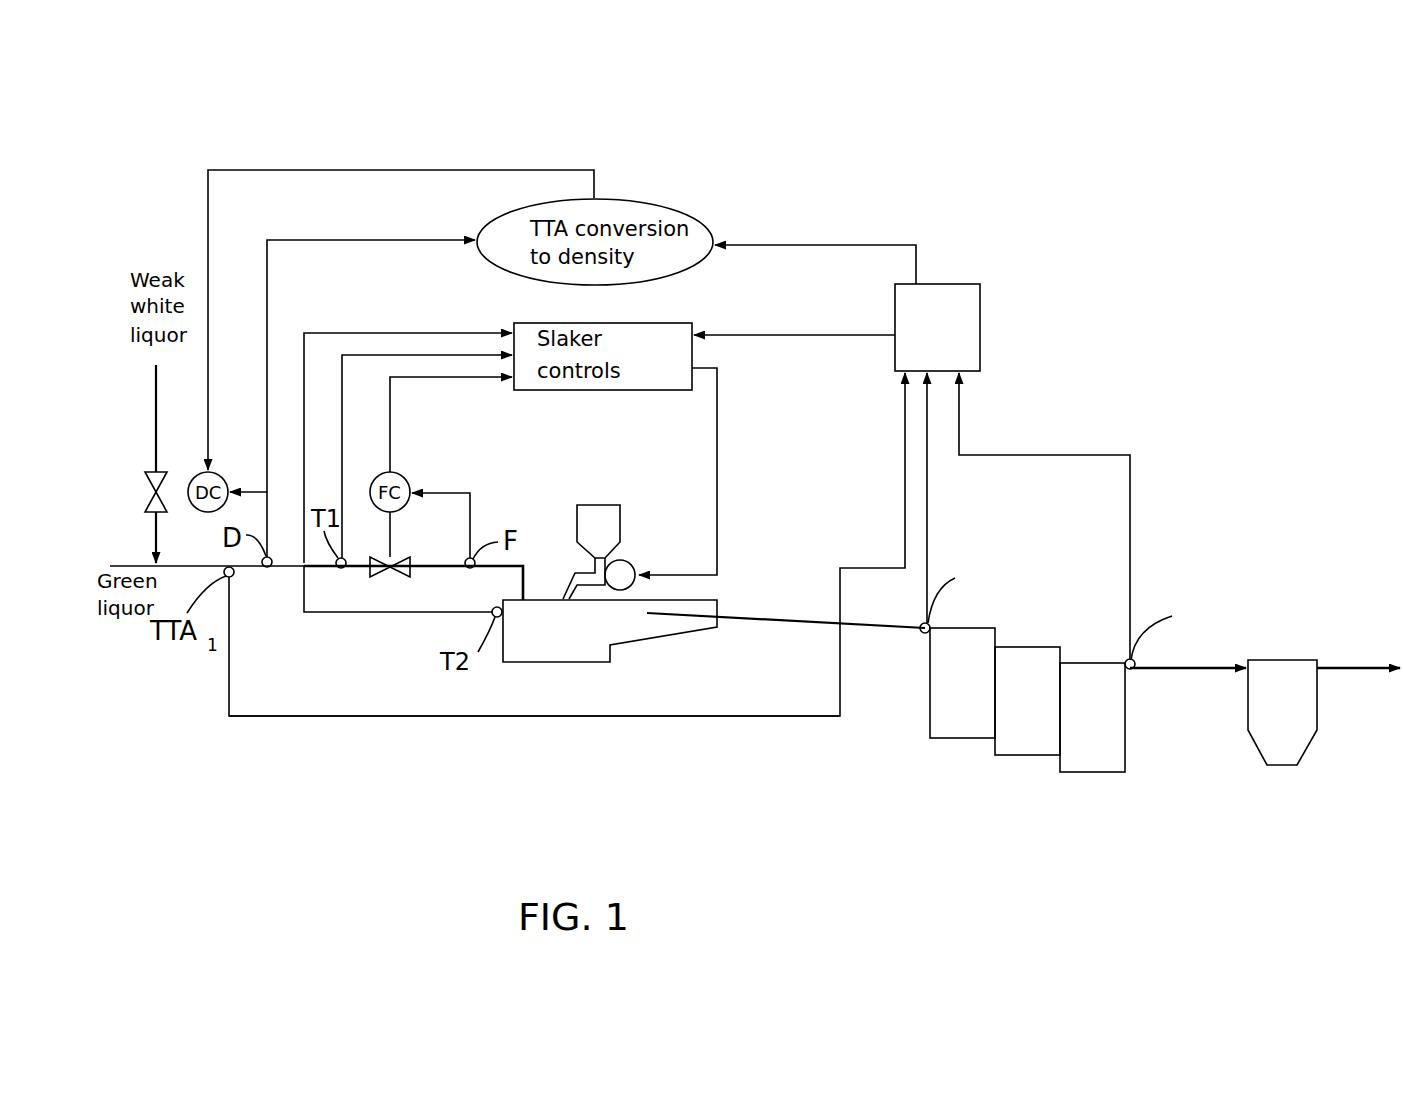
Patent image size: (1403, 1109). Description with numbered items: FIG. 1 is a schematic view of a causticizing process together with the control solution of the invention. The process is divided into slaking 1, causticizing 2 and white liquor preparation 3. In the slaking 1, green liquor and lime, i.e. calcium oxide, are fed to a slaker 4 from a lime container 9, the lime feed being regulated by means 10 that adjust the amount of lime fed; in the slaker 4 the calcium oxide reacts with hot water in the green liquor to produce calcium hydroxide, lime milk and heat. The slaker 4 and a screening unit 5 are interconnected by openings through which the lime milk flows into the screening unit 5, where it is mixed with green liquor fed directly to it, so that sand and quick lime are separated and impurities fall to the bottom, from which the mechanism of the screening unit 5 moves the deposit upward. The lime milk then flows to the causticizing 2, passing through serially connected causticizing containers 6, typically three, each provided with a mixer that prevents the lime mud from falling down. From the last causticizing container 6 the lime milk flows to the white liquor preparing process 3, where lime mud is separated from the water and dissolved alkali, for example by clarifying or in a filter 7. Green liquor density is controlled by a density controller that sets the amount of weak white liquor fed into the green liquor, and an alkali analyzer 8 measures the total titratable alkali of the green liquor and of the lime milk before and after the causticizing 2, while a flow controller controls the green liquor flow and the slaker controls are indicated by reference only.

The slaking 1 is at (472, 760).
The causticizing 2 is at (1023, 810).
The white liquor preparation 3 is at (1282, 812).
The slaker 4 is at (567, 635).
The screening unit 5 is at (648, 628).
The causticizing containers 6 is at (952, 688).
The filter 7 is at (1280, 690).
The alkali analyzer 8 is at (958, 323).
The lime container 9 is at (603, 522).
The means to adjust the amount of lime fed 10 is at (617, 558).